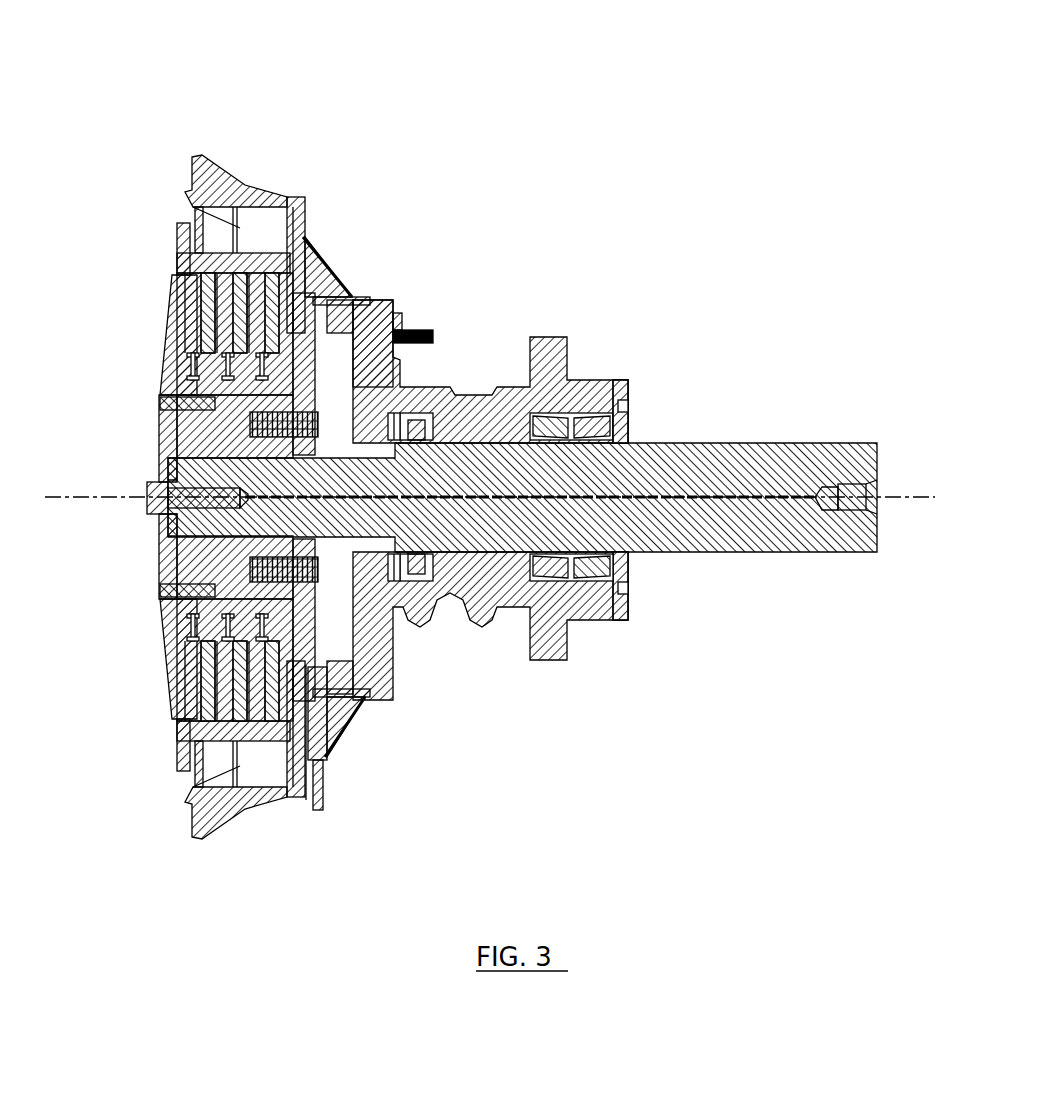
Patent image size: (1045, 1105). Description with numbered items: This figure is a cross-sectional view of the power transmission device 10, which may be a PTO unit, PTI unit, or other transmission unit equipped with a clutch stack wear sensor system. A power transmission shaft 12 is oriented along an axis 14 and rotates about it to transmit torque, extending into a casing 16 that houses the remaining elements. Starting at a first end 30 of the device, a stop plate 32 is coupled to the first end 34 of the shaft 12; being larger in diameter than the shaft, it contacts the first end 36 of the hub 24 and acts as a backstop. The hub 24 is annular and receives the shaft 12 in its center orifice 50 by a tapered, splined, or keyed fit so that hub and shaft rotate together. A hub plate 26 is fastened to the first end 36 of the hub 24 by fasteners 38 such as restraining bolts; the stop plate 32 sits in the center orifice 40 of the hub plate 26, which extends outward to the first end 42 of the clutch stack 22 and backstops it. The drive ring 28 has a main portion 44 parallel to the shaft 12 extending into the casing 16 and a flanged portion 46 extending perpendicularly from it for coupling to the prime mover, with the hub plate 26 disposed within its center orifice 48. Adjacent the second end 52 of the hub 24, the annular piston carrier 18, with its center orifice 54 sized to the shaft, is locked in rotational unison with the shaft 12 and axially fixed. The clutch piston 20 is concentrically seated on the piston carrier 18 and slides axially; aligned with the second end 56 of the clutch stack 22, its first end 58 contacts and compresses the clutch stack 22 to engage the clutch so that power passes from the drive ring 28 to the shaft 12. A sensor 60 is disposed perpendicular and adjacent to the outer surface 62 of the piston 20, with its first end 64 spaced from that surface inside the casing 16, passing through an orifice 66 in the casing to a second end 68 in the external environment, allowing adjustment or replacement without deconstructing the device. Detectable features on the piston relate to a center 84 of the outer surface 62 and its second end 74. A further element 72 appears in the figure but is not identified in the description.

The power transmission device 10 is at (668, 68).
The power transmission shaft 12 is at (767, 527).
The axis 14 is at (897, 500).
The casing 16 is at (230, 190).
The piston carrier 18 is at (403, 613).
The clutch piston 20 is at (340, 297).
The clutch stack 22 is at (177, 277).
The hub 24 is at (160, 587).
The hub plate 26 is at (167, 323).
The drive ring 28 is at (173, 250).
The first end 30 is at (102, 528).
The stop plate 32 is at (160, 437).
The first end of the shaft 34 is at (160, 472).
The first end of hub 36 is at (160, 567).
The fasteners 38 is at (160, 600).
The center orifice 40 is at (143, 382).
The first end of the clutch stack 42 is at (170, 687).
The main portion 44 is at (283, 213).
The flanged portion 46 is at (173, 243).
The center orifice 48 is at (103, 300).
The center orifice 50 is at (112, 512).
The second end of the hub 52 is at (357, 697).
The center orifice 54 is at (480, 620).
The second end of the clutch stack 56 is at (323, 303).
The first end of the piston 58 is at (262, 742).
The sensor 60 is at (322, 750).
The outer surface 62 is at (310, 340).
The first end of the sensor 64 is at (327, 720).
The orifice 66 is at (300, 805).
The second end of the sensor 68 is at (320, 813).
The housing wall 72 is at (393, 357).
The second end of the outer surface 74 is at (393, 320).
The center 84 is at (275, 722).